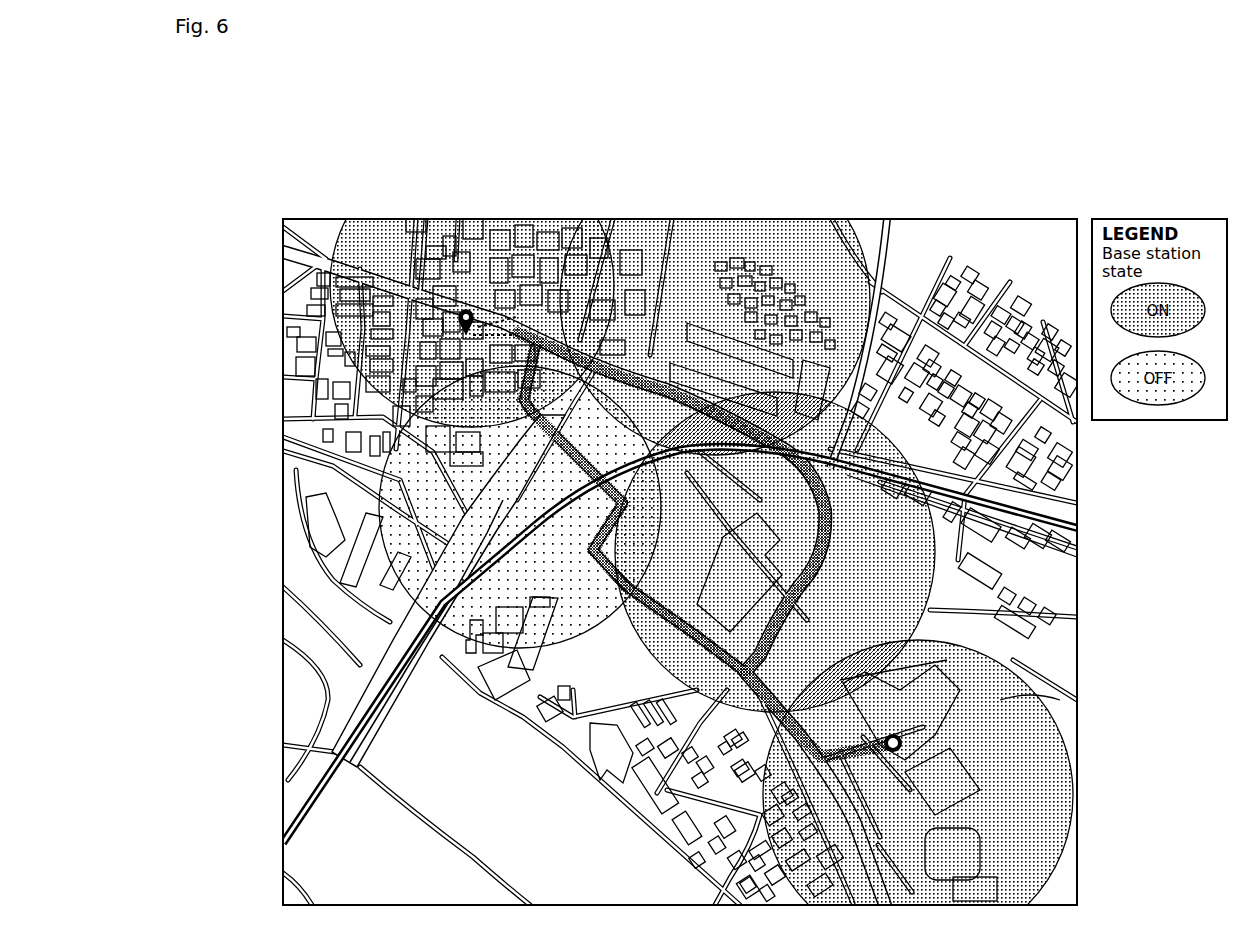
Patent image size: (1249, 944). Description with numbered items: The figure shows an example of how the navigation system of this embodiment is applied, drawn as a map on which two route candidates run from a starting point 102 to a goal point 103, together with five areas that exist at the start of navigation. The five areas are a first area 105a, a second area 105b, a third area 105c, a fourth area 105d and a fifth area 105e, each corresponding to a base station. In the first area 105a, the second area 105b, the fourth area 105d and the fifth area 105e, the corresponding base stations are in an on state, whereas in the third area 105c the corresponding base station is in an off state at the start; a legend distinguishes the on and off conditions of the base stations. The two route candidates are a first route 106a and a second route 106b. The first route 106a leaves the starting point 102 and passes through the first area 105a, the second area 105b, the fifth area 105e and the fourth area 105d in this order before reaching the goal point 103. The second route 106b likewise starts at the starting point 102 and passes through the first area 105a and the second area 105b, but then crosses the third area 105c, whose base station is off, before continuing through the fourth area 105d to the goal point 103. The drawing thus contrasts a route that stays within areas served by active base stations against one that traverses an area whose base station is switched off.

The starting point 102 is at (905, 745).
The goal point 103 is at (465, 310).
The first area 105a is at (1047, 841).
The second area 105b is at (973, 640).
The third area 105c is at (385, 510).
The fourth area 105d is at (380, 222).
The fifth area 105e is at (726, 226).
The first route 106a is at (975, 562).
The second route 106b is at (453, 544).